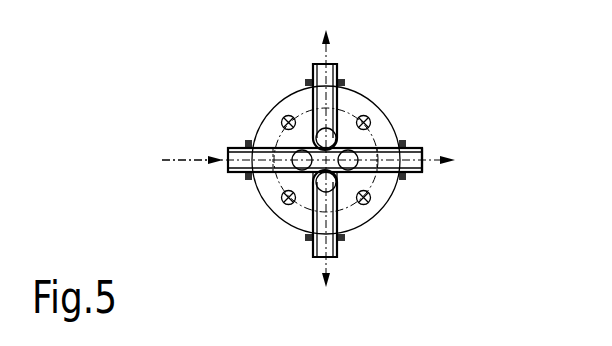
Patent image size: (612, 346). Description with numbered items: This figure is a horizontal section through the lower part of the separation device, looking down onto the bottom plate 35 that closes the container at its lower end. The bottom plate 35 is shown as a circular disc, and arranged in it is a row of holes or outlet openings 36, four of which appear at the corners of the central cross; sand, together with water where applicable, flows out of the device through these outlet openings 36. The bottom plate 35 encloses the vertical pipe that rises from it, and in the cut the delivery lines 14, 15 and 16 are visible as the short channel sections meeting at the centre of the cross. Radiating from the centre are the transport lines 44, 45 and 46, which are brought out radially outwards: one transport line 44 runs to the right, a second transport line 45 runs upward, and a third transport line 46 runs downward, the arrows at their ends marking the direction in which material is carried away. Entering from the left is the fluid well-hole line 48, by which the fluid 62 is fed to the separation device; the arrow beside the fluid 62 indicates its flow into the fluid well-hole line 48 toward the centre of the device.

The delivery line 14 is at (313, 183).
The delivery line 15 is at (338, 137).
The delivery line 16 is at (338, 180).
The bottom plate 35 is at (357, 100).
The outlet openings 36 is at (287, 115).
The transport line 44 is at (418, 173).
The transport line 45 is at (334, 70).
The transport line 46 is at (336, 226).
The fluid well-hole line 48 is at (232, 148).
The fluid 62 is at (185, 156).